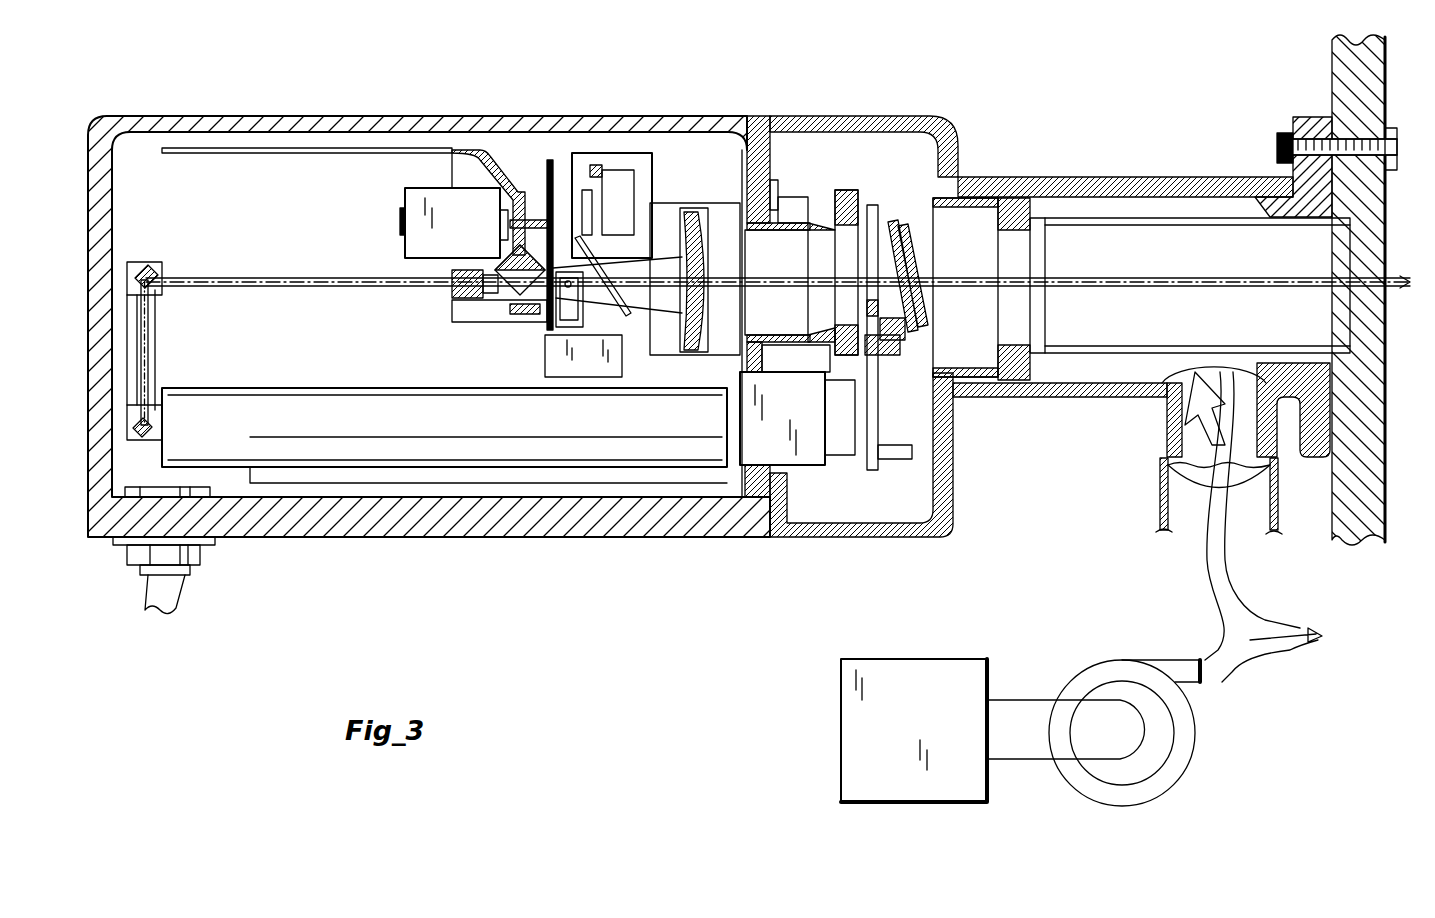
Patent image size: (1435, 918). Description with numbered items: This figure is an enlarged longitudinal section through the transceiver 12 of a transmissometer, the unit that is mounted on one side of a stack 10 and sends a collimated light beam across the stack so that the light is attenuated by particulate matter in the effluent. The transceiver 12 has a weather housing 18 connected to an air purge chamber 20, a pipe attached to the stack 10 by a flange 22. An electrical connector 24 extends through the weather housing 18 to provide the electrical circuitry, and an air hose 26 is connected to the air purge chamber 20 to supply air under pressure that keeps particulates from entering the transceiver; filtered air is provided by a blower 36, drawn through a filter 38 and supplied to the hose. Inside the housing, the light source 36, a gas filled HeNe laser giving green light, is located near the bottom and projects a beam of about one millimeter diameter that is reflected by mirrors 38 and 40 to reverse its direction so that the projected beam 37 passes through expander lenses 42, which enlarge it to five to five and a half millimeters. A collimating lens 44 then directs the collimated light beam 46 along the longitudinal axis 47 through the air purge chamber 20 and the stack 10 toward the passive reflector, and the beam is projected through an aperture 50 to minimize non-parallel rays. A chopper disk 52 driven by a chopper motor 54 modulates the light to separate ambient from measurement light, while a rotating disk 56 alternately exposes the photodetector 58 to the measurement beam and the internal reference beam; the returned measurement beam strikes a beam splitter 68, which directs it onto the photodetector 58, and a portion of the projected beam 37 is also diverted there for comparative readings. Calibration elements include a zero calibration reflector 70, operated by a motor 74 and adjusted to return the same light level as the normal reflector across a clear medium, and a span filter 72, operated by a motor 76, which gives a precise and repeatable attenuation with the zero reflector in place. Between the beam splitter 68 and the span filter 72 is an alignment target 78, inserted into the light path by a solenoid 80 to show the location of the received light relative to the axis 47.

The stack 10 is at (1342, 64).
The transceiver 12 is at (813, 102).
The weather housing 18 is at (543, 117).
The air purge chamber 20 is at (1115, 177).
The flange 22 is at (1300, 117).
The electrical connector 24 is at (185, 588).
The air hose 26 is at (1162, 500).
The light source 36 is at (415, 450).
The projected beam 37 is at (152, 300).
The mirror 38 is at (840, 696).
The mirror 40 is at (160, 270).
The expander lenses 42 is at (455, 298).
The collimating lens 44 is at (700, 357).
The collimated light beam 46 is at (1160, 300).
The longitudinal axis 47 is at (1320, 292).
The aperture 50 is at (848, 238).
The chopper disk 52 is at (520, 160).
The chopper motor 54 is at (420, 190).
The rotating disk 56 is at (555, 165).
The photodetector 58 is at (525, 314).
The beam splitter 68 is at (503, 262).
The zero calibration reflector 70 is at (905, 225).
The span filter 72 is at (630, 318).
The motor 74 is at (800, 445).
The motor 76 is at (632, 190).
The alignment target 78 is at (566, 318).
The solenoid 80 is at (565, 378).